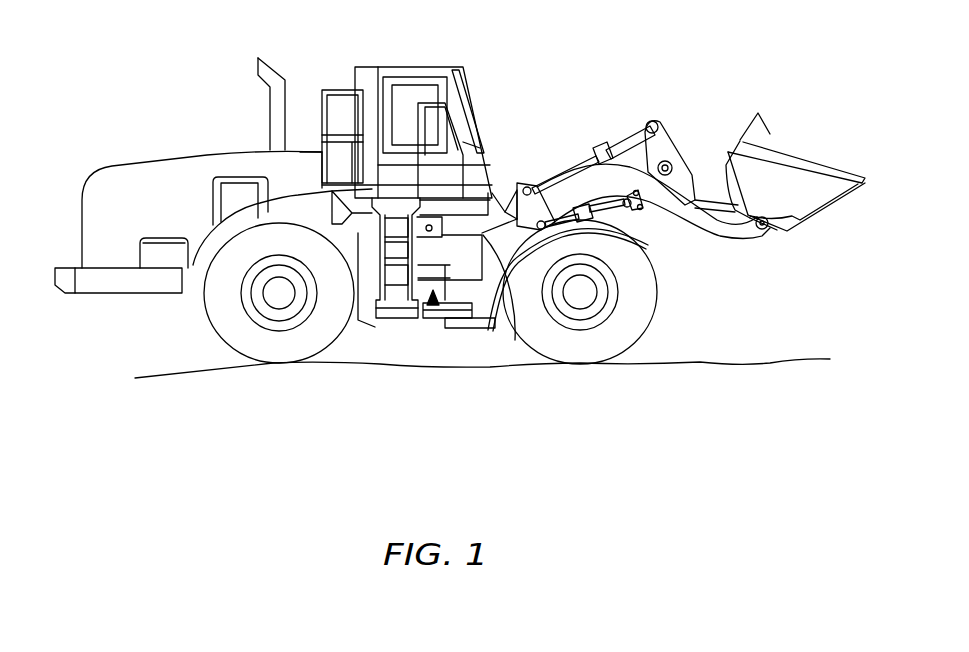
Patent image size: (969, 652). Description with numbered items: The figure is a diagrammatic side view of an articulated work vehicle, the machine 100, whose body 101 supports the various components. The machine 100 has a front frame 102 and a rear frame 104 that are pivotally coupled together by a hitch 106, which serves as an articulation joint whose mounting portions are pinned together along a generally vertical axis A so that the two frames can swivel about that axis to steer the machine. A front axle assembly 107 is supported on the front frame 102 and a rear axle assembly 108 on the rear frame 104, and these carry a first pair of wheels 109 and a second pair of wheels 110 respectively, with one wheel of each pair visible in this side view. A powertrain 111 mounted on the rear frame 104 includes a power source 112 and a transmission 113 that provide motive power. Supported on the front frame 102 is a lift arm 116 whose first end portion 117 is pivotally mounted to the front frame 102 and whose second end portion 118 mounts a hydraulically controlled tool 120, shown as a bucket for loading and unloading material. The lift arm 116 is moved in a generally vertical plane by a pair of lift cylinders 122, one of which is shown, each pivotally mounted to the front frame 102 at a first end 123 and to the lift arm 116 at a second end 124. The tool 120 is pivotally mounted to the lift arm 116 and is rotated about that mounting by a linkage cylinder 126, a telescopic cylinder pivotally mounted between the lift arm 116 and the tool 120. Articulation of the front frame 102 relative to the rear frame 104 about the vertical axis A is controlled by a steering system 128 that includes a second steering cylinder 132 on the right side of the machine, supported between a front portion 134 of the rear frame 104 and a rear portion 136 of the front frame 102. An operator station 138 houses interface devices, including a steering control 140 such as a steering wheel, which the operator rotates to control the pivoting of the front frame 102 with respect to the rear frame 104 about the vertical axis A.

The machine 100 is at (723, 56).
The body 101 is at (533, 330).
The front frame 102 is at (467, 338).
The rear frame 104 is at (128, 285).
The hitch 106 is at (430, 340).
The front axle assembly 107 is at (581, 295).
The rear axle assembly 108 is at (277, 303).
The first pair of wheels 109 is at (585, 350).
The second pair of wheels 110 is at (283, 348).
The powertrain 111 is at (135, 207).
The power source 112 is at (236, 195).
The transmission 113 is at (165, 250).
The lift arm 116 is at (707, 230).
The first end portion 117 is at (523, 183).
The second end portion 118 is at (760, 229).
The tool 120 is at (825, 190).
The lift cylinder 122 is at (568, 215).
The first end 123 is at (510, 213).
The second end 124 is at (637, 213).
The linkage cylinder 126 is at (605, 145).
The steering system 128 is at (418, 340).
The second steering cylinder 132 is at (463, 334).
The front portion 134 is at (420, 335).
The rear portion 136 is at (467, 340).
The operator station 138 is at (367, 68).
The steering control 140 is at (467, 130).
The vertical axis A is at (445, 338).